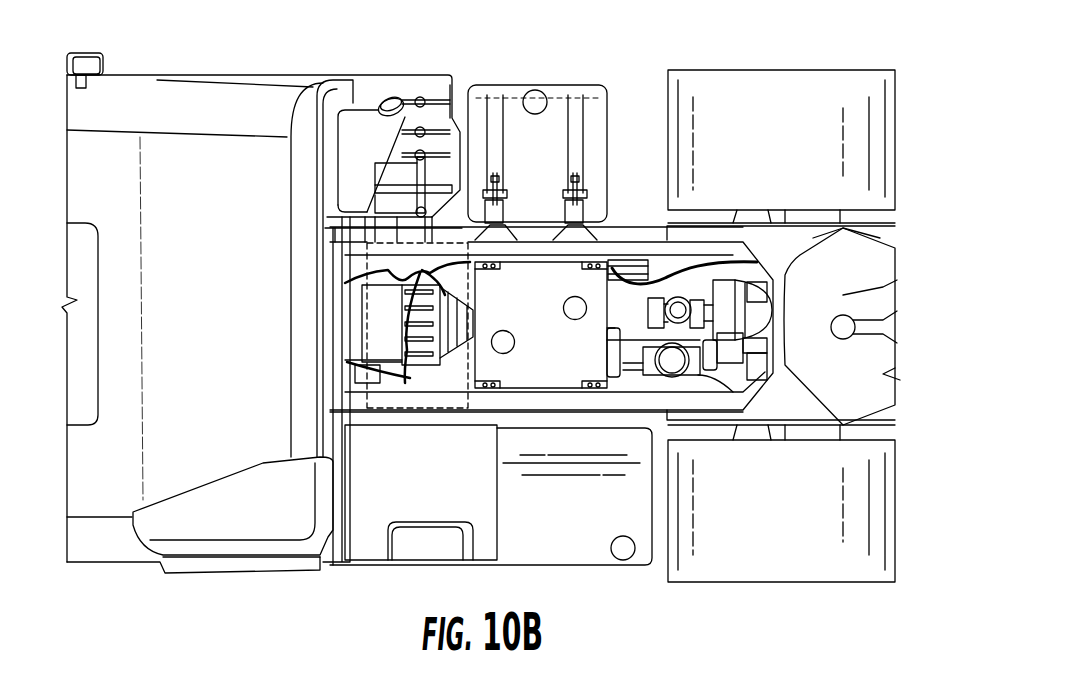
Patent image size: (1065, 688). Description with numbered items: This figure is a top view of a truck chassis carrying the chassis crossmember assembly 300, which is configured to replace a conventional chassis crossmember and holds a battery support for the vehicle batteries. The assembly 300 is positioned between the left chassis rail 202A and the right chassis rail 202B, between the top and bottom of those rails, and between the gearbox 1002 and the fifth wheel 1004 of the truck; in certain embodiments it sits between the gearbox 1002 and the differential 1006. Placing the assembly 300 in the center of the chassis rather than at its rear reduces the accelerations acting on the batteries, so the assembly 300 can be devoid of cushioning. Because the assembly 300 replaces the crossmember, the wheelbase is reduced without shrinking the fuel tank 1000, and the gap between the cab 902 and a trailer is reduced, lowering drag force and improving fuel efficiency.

The chassis crossmember assembly 300 is at (535, 292).
The cab 902 is at (552, 243).
The left chassis rail 202A is at (661, 397).
The right chassis rail 202B is at (628, 253).
The fuel tank 1000 is at (545, 545).
The gearbox 1002 is at (400, 293).
The fifth wheel 1004 is at (845, 294).
The differential 1006 is at (662, 300).